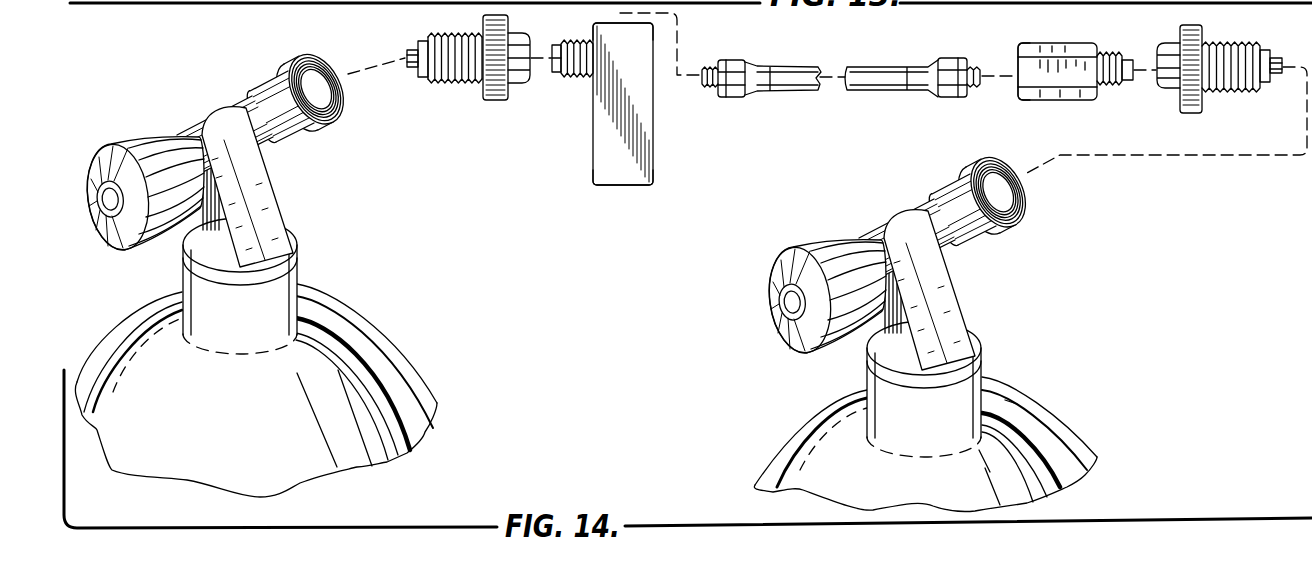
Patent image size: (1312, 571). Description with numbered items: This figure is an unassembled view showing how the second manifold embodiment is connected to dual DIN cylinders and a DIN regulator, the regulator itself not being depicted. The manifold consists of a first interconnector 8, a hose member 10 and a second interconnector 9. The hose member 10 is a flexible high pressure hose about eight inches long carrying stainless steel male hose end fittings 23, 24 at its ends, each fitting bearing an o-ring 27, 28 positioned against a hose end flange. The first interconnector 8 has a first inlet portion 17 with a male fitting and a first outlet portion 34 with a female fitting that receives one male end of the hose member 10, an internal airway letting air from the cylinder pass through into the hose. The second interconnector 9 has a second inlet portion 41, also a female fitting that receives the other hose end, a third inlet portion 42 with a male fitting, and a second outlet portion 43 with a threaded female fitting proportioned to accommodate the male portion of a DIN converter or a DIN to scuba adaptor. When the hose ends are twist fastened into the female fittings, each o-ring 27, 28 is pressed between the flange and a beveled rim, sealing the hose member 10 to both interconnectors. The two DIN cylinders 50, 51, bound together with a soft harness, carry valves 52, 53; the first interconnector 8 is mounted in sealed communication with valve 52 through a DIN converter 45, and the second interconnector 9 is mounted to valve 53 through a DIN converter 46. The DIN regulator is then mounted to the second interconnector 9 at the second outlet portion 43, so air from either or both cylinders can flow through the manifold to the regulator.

The first interconnector 8 is at (1071, 70).
The second interconnector 9 is at (593, 143).
The hose member 10 is at (793, 91).
The first inlet portion 17 is at (1118, 50).
The hose end fitting 23 is at (969, 72).
The hose end fitting 24 is at (713, 76).
The o-ring 27 is at (972, 60).
The o-ring 28 is at (712, 62).
The first outlet portion 34 is at (1015, 82).
The second inlet portion 41 is at (604, 17).
The third inlet portion 42 is at (570, 78).
The second outlet portion 43 is at (655, 150).
The DIN converter 45 is at (1198, 25).
The DIN converter 46 is at (493, 100).
The DIN cylinder 50 is at (1033, 400).
The DIN cylinder 51 is at (361, 310).
The valve 52 is at (889, 212).
The valve 53 is at (210, 112).